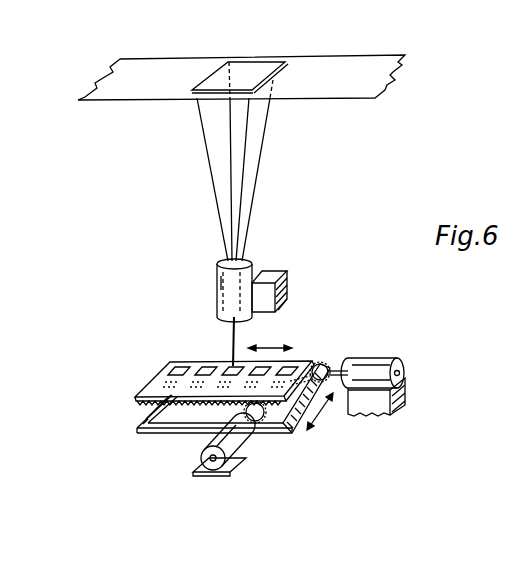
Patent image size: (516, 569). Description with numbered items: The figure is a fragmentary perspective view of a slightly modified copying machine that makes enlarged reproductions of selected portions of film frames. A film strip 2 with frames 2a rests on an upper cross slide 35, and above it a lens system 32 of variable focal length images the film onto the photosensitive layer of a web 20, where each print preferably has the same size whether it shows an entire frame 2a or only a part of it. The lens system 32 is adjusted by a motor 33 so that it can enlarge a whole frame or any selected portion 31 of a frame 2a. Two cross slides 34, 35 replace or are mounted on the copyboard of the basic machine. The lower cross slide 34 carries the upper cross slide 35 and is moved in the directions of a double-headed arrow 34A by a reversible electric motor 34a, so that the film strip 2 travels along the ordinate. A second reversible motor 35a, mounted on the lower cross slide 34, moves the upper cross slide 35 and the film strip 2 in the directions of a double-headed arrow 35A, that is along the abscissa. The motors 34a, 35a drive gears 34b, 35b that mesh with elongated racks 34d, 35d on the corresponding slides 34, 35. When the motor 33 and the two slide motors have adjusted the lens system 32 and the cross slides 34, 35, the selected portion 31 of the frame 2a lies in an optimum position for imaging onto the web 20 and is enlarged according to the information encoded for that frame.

The web 20 is at (241, 57).
The lens system 32 is at (216, 278).
The motor 33 is at (291, 274).
The selected portion 31 is at (212, 341).
The film strip 2 is at (228, 365).
The film frame 2a is at (210, 356).
The double-headed arrow 35A is at (296, 317).
The upper cross slide 35 is at (182, 425).
The elongated rack 35d is at (125, 433).
The gear 35b is at (207, 443).
The second reversible motor 35a is at (230, 488).
The lower cross slide 34 is at (298, 444).
The elongated rack 34d is at (298, 444).
The reversible electric motor 34a is at (385, 371).
The gear 34b is at (346, 341).
The double-headed arrow 34A is at (346, 430).